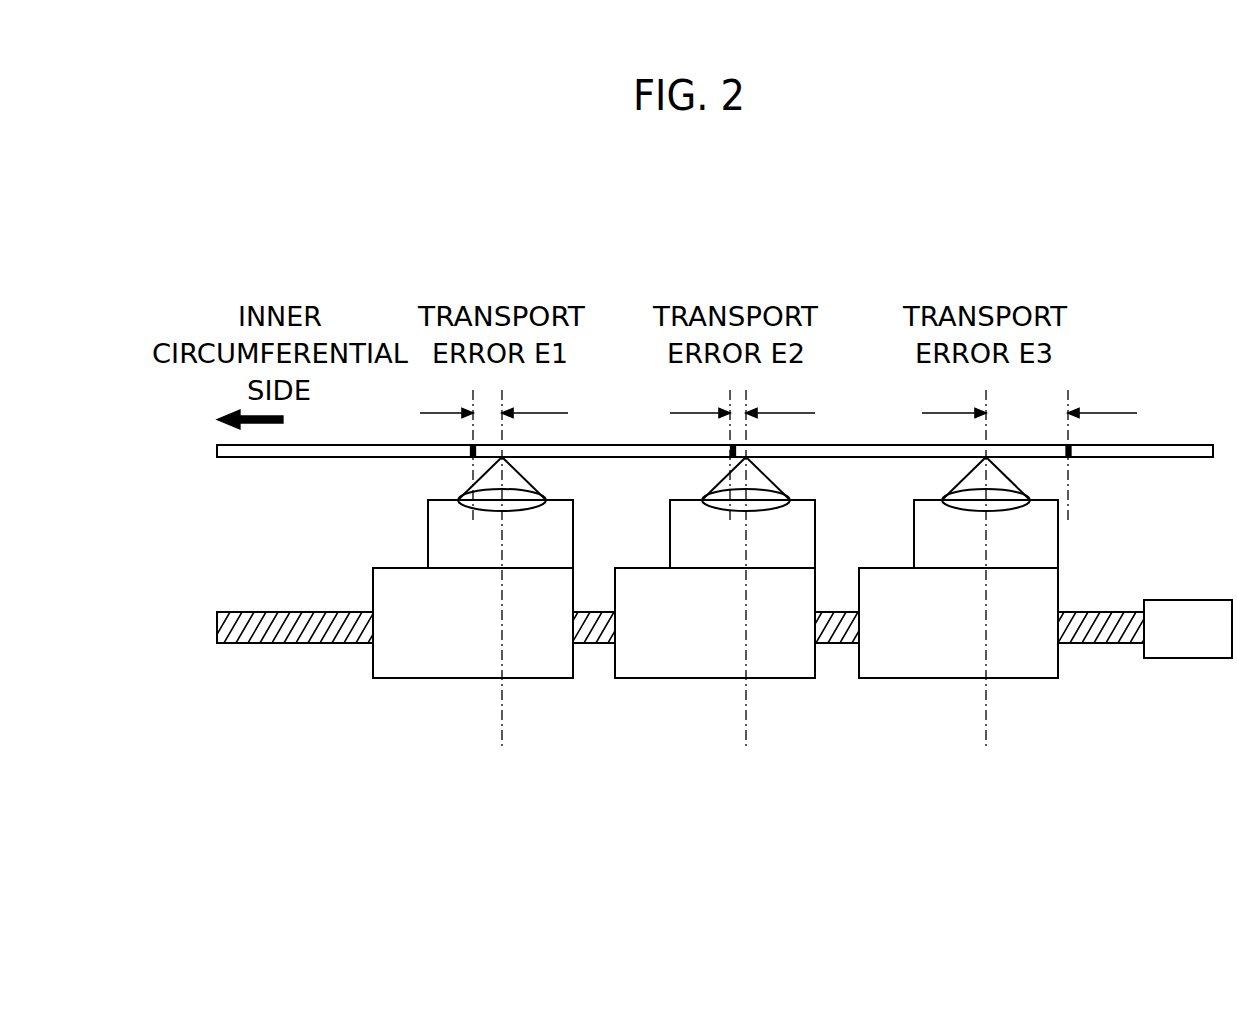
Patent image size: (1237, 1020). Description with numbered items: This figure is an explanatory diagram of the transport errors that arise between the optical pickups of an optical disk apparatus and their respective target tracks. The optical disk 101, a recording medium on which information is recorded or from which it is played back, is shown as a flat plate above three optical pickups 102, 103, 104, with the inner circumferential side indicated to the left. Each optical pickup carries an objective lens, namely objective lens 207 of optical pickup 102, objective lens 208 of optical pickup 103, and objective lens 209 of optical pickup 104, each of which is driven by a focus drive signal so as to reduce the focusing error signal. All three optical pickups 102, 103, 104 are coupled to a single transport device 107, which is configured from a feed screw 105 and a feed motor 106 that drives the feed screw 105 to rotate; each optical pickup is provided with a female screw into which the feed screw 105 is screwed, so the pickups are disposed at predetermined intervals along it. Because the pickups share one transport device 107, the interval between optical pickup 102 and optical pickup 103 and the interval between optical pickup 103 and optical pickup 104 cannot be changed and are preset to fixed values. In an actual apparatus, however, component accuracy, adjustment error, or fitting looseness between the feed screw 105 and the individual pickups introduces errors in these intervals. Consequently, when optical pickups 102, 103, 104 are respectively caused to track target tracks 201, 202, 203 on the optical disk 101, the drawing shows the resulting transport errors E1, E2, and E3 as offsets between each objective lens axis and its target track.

The optical disk 101 is at (1183, 445).
The optical pickup 102 is at (422, 660).
The optical pickup 103 is at (697, 660).
The optical pickup 104 is at (923, 658).
The feed screw 105 is at (1087, 643).
The feed motor 106 is at (1158, 627).
The transport device 107 is at (1236, 707).
The target track 201 is at (472, 451).
The target track 202 is at (731, 450).
The target track 203 is at (1072, 446).
The objective lens 207 is at (472, 509).
The objective lens 208 is at (717, 510).
The objective lens 209 is at (1020, 508).